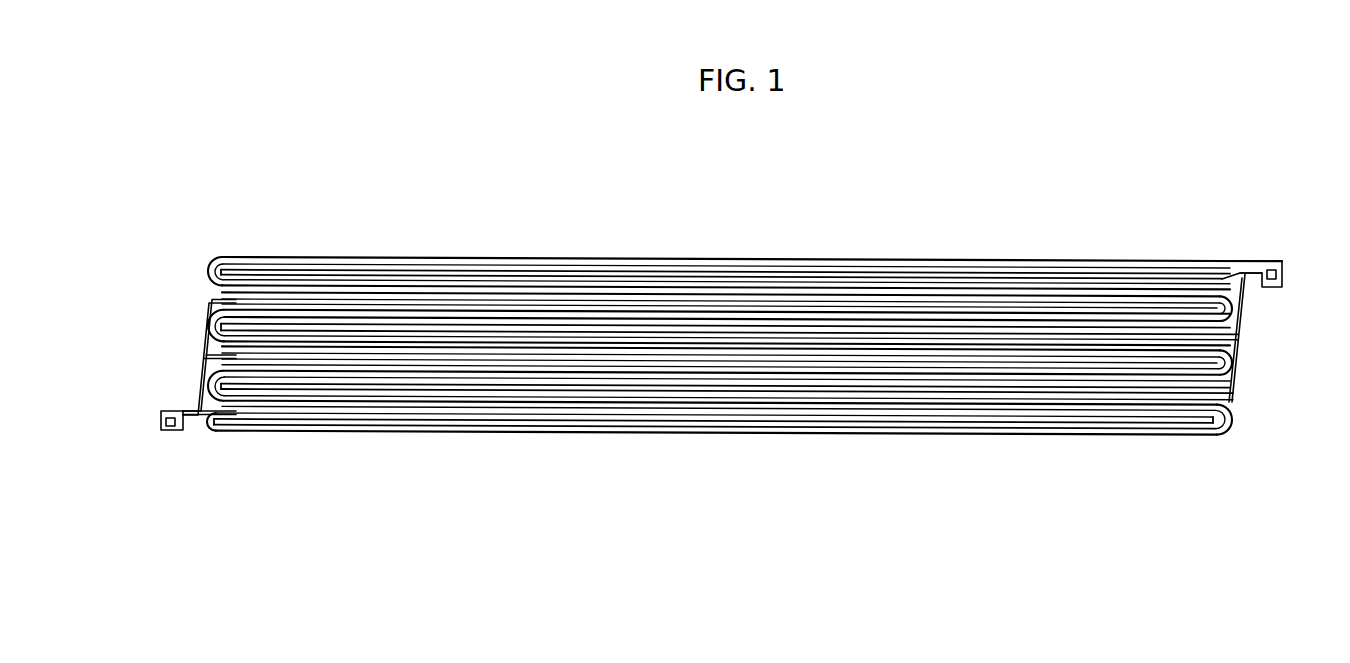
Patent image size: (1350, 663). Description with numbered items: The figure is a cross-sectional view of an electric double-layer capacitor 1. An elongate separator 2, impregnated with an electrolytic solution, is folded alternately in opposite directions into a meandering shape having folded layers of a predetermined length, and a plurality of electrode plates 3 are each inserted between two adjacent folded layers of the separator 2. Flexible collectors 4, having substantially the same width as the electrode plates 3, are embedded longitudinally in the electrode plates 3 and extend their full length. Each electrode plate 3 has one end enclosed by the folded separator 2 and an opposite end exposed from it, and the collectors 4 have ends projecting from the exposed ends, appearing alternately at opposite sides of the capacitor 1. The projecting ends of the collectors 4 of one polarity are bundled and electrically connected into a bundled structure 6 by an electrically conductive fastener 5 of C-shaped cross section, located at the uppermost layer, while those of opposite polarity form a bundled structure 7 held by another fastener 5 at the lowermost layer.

The electric double-layer capacitor 1 is at (744, 319).
The separator 2 is at (941, 260).
The electrode plate 3 is at (1026, 268).
The flexible collector 4 is at (1231, 272).
The fastener 5 is at (1284, 274).
The bundled structure 6 is at (1270, 247).
The bundled structure 7 is at (178, 454).